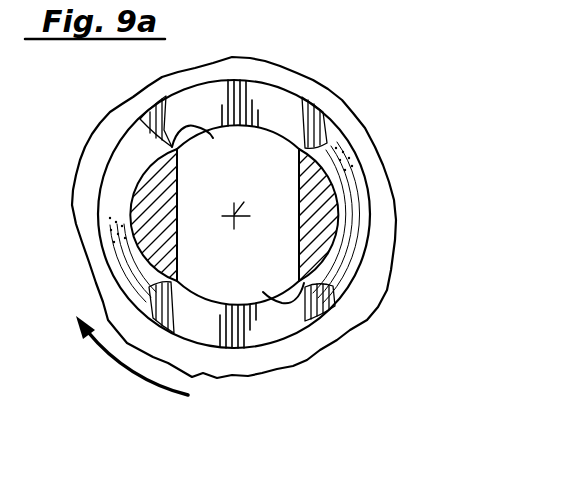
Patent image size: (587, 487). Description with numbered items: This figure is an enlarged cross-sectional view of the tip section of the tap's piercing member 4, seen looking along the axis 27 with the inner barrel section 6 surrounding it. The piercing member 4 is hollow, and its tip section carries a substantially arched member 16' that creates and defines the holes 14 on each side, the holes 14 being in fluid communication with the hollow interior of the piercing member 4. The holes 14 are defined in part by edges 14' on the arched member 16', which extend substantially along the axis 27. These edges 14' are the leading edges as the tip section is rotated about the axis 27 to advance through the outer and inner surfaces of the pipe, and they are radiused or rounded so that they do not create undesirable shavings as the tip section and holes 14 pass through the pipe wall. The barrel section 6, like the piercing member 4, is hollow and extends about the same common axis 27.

The piercing member 4 is at (338, 80).
The inner barrel section 6 is at (120, 100).
The holes 14 is at (237, 210).
The edges 14' is at (238, 215).
The arched member 16' is at (228, 215).
The axis 27 is at (237, 210).